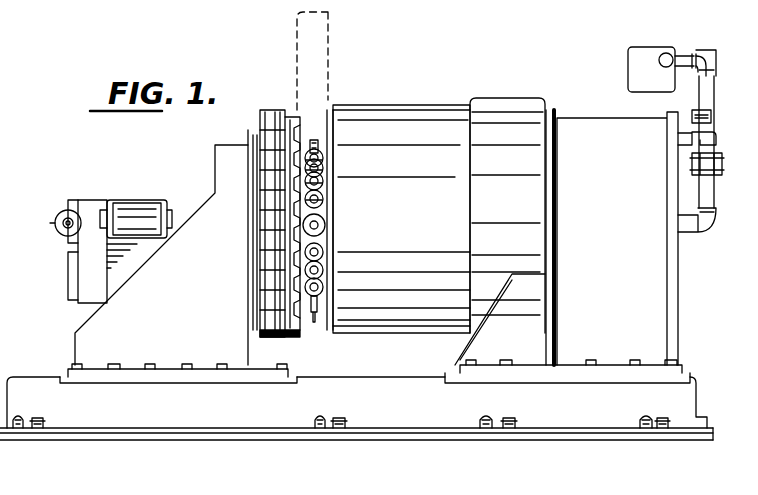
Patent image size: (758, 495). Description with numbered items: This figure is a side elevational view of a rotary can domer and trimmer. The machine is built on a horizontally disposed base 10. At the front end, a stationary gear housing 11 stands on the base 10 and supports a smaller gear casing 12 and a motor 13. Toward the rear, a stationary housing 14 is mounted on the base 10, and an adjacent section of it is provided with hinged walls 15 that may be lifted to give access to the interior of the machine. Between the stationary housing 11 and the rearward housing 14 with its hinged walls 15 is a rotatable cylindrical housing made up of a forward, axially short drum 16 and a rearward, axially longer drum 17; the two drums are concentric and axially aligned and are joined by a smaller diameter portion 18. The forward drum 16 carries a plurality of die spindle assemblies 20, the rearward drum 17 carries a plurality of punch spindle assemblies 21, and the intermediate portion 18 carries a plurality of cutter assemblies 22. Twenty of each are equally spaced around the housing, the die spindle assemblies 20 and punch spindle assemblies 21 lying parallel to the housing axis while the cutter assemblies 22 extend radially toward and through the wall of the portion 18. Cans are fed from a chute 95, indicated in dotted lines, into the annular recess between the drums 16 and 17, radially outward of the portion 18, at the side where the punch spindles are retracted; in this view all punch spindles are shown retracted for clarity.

The base 10 is at (173, 422).
The stationary gear housing 11 is at (96, 339).
The gear casing 12 is at (90, 271).
The motor 13 is at (147, 204).
The rearward stationary housing 14 is at (655, 297).
The hinged walls 15 is at (487, 112).
The forward drum 16 is at (268, 110).
The rearward drum 17 is at (372, 113).
The smaller diameter portion 18 is at (320, 171).
The die spindle assemblies 20 is at (299, 120).
The punch spindle assemblies 21 is at (336, 322).
The cutter assemblies 22 is at (319, 225).
The chute 95 is at (296, 34).